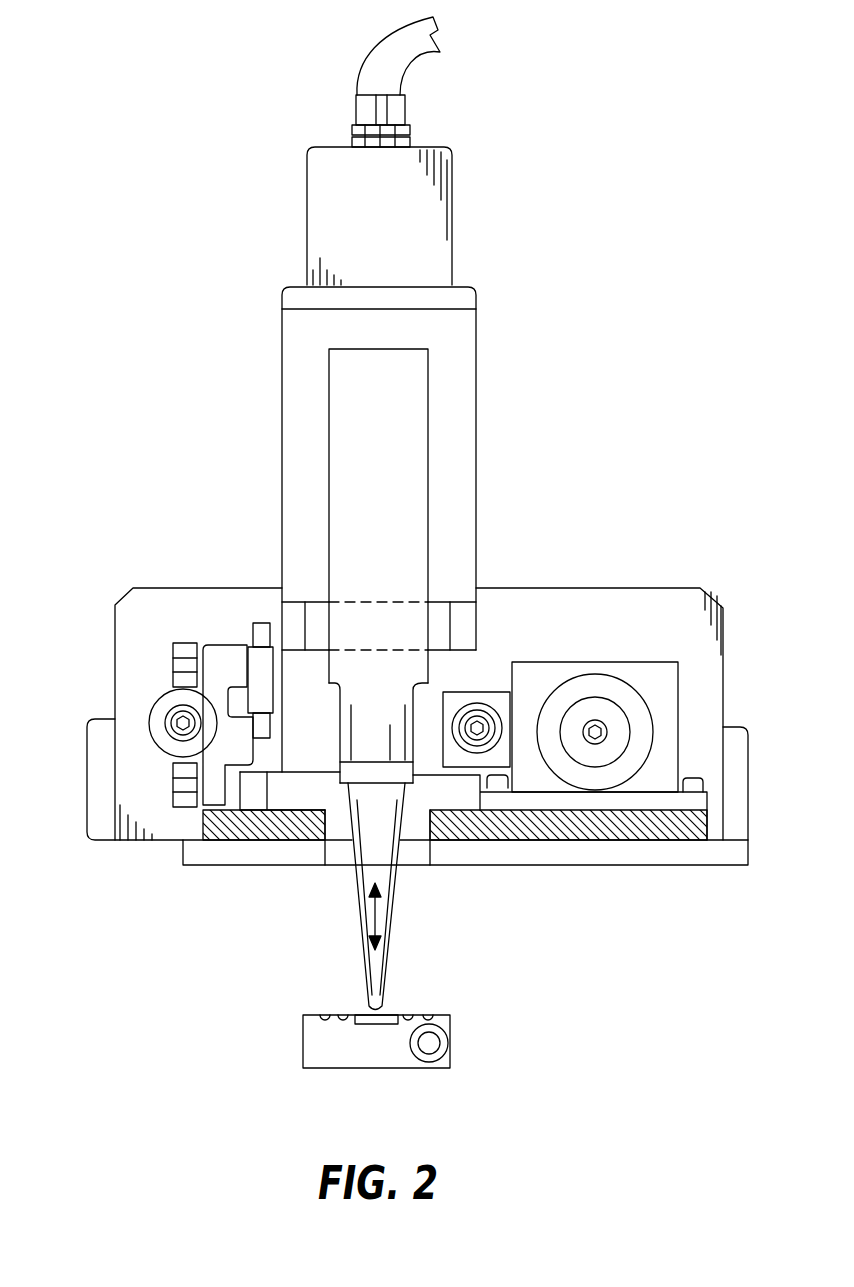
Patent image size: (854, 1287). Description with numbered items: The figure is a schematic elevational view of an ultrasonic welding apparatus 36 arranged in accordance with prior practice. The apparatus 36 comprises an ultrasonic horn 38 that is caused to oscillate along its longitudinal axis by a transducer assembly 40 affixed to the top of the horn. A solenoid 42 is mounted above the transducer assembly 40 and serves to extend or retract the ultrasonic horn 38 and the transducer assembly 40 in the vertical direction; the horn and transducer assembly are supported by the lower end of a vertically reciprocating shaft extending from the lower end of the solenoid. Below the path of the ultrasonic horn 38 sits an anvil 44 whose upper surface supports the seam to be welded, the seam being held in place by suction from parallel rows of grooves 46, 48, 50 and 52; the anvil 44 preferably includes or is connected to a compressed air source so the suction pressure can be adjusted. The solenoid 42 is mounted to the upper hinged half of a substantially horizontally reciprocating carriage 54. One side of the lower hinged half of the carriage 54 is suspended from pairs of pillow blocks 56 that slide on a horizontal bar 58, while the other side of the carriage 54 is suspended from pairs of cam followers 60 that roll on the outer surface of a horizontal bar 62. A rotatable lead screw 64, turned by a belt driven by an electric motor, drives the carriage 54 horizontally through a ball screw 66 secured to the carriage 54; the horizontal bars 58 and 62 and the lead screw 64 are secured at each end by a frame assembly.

The ultrasonic welding apparatus 36 is at (258, 248).
The ultrasonic horn 38 is at (395, 945).
The transducer assembly 40 is at (450, 442).
The solenoid 42 is at (422, 243).
The anvil 44 is at (355, 1068).
The groove 46 is at (325, 1012).
The groove 48 is at (345, 1012).
The groove 50 is at (410, 1012).
The groove 52 is at (428, 1012).
The horizontally reciprocating carriage 54 is at (227, 628).
The pillow blocks 56 is at (652, 682).
The horizontal bar 58 is at (593, 683).
The cam followers 60 is at (173, 668).
The horizontal bar 62 is at (157, 702).
The lead screw 64 is at (465, 720).
The ball screw 66 is at (493, 700).